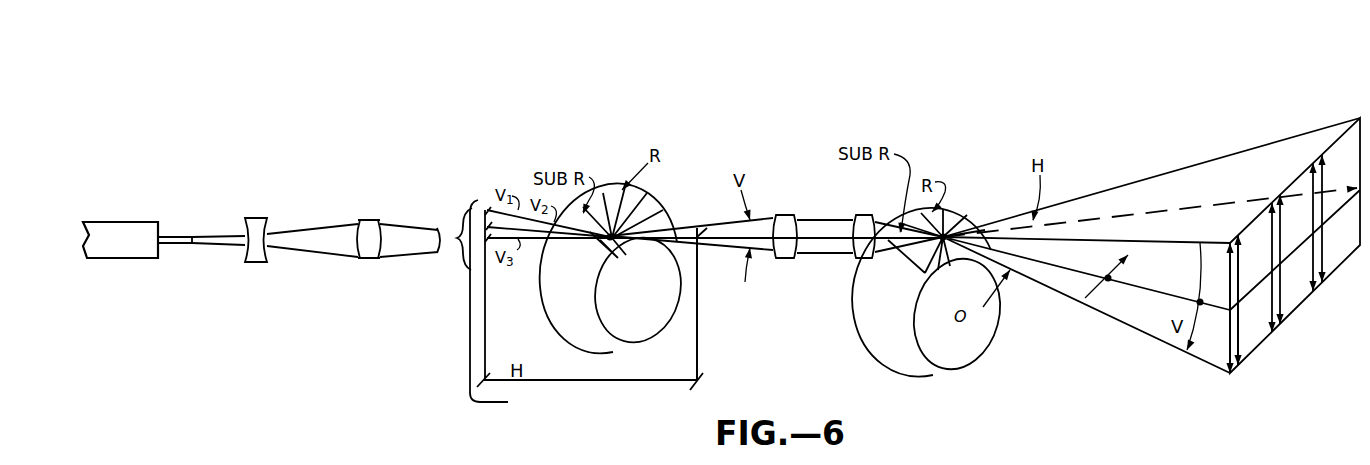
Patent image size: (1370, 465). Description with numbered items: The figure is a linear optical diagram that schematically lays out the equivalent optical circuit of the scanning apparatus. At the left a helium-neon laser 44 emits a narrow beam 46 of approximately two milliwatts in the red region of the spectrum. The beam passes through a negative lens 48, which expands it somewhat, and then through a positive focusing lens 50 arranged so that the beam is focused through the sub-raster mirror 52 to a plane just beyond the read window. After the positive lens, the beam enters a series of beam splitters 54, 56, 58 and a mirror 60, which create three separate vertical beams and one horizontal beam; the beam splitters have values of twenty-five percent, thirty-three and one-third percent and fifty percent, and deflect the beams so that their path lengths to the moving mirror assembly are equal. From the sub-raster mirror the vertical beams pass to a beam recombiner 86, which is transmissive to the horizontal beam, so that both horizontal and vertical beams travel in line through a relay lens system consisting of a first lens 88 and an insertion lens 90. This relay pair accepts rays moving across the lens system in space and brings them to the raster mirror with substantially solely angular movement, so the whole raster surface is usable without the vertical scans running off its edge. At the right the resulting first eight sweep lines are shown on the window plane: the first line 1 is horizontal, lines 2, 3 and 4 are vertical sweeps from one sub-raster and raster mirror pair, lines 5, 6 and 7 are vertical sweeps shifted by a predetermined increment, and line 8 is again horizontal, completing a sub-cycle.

The helium-neon laser 44 is at (139, 227).
The narrow beam 46 is at (223, 236).
The negative lens 48 is at (257, 218).
The positive focusing lens 50 is at (368, 220).
The sub-raster mirror 52 is at (612, 236).
The beam splitter 54 is at (483, 213).
The beam splitter 56 is at (483, 228).
The beam splitter 58 is at (483, 240).
The mirror 60 is at (496, 306).
The beam recombiner 86 is at (697, 228).
The first lens 88 is at (788, 215).
The insertion lens 90 is at (863, 215).
The first sweep line 1 is at (1250, 300).
The sweep line 2 is at (1223, 298).
The sweep line 3 is at (1267, 261).
The sweep line 4 is at (1307, 221).
The sweep line 5 is at (1240, 289).
The sweep line 6 is at (1280, 248).
The sweep line 7 is at (1324, 208).
The sweep line 8 is at (1251, 300).